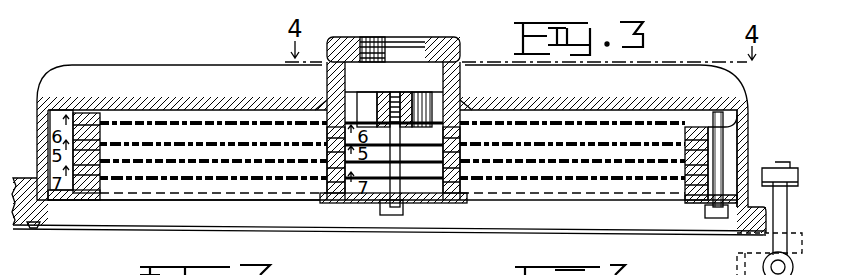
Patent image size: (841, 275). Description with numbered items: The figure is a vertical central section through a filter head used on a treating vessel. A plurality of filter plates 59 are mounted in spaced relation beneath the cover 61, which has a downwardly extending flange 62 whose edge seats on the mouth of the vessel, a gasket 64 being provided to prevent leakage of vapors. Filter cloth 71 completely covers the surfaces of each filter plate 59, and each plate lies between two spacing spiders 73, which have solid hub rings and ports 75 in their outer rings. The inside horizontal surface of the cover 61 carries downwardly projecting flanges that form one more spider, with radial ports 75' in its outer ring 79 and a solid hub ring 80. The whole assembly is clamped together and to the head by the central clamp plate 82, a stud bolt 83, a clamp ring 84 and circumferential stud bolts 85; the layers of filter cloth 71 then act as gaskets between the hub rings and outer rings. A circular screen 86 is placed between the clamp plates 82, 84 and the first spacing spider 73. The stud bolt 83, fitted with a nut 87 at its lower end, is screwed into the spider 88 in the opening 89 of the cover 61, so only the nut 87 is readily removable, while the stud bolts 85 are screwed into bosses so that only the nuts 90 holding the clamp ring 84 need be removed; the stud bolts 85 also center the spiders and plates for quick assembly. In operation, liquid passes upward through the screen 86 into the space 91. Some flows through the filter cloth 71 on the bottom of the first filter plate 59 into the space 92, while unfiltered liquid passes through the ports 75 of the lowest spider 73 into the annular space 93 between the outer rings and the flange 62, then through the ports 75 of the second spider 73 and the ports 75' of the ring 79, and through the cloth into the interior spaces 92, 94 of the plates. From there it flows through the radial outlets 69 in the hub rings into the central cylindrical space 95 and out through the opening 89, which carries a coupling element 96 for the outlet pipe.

The filter plates 59 is at (643, 172).
The cover 61 is at (245, 97).
The downwardly extending flange 62 is at (37, 134).
The gasket 64 is at (33, 229).
The outlets 69 is at (500, 135).
The filter cloth 71 is at (620, 124).
The spiders 73 is at (685, 196).
The ports 75 is at (119, 170).
The radial ports 75' is at (110, 128).
The outer ring 79 is at (100, 118).
The solid hub ring 80 is at (322, 118).
The central clamp plate 82 is at (447, 205).
The stud bolt 83 is at (392, 212).
The clamp ring 84 is at (72, 197).
The stud bolts 85 is at (718, 168).
The circular screen 86 is at (268, 196).
The nut 87 is at (378, 210).
The spider 88 is at (408, 95).
The opening 89 is at (446, 97).
The nuts 90 is at (713, 219).
The space 91 is at (519, 191).
The space 92 is at (583, 174).
The annular space 93 is at (727, 151).
The space 94 is at (565, 136).
The central cylindrical space 95 is at (425, 172).
The coupling element 96 is at (341, 48).